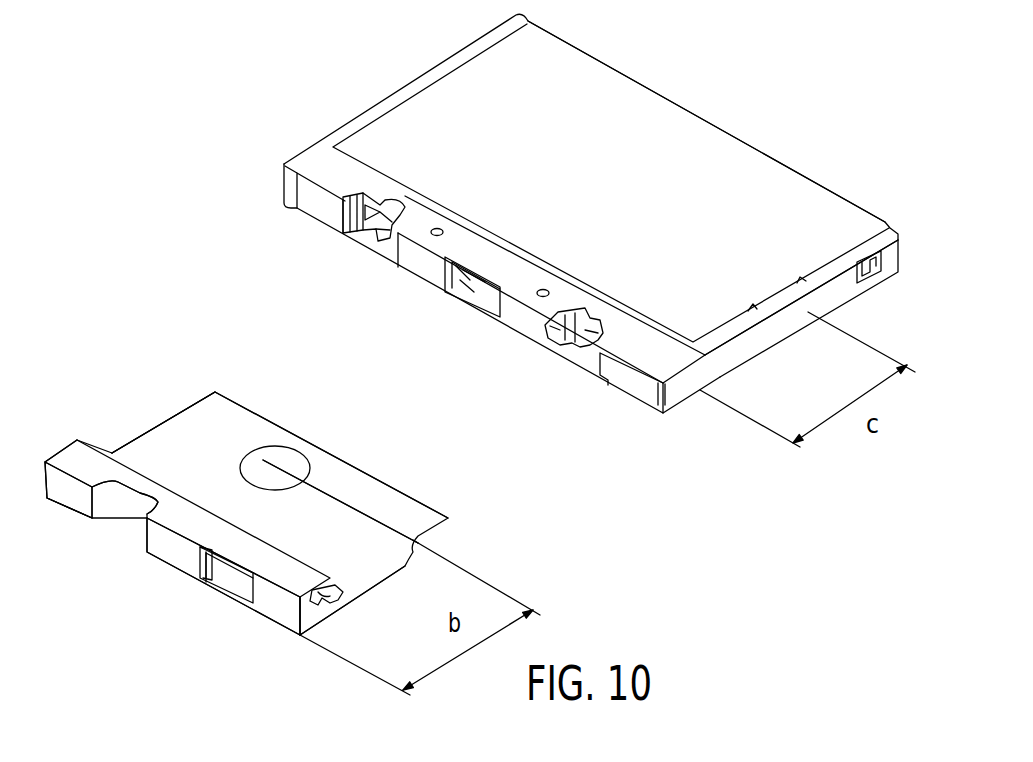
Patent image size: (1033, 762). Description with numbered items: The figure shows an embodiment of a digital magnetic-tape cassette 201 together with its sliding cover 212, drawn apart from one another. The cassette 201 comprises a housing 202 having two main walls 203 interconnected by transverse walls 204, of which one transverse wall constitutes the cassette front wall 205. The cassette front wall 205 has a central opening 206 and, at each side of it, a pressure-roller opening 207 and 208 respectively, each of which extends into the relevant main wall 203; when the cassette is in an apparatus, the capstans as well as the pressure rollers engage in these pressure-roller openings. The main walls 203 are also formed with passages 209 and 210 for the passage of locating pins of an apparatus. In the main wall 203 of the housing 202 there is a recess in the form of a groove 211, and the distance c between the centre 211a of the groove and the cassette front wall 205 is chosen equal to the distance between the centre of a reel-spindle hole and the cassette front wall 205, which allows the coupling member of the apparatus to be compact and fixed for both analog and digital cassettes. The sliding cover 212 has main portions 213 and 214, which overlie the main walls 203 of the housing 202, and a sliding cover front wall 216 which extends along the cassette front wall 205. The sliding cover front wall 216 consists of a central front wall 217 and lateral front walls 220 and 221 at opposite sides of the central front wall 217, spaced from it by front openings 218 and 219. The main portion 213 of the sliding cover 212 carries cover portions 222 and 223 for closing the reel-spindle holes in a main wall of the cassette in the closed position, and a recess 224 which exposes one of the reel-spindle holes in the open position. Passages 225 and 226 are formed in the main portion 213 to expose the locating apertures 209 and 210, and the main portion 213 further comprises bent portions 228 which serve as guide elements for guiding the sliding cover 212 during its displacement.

The cassette 201 is at (364, 102).
The housing 202 is at (760, 141).
The main walls 203 is at (565, 68).
The transverse walls 204 is at (788, 322).
The cassette front wall 205 is at (630, 384).
The central opening 206 is at (472, 291).
The pressure-roller opening 207 is at (368, 241).
The pressure-roller opening 208 is at (574, 352).
The passage 209 is at (439, 228).
The passage 210 is at (545, 288).
The groove 211 is at (757, 318).
The centre of the groove 211a is at (779, 298).
The sliding cover 212 is at (246, 392).
The main portion 213 is at (138, 438).
The main portion 214 is at (58, 440).
The sliding cover front wall 216 is at (43, 482).
The central front wall 217 is at (166, 548).
The front opening 218 is at (118, 525).
The front opening 219 is at (239, 580).
The lateral front wall 220 is at (82, 500).
The lateral front wall 221 is at (278, 612).
The cover portion 222 is at (201, 421).
The cover portion 223 is at (400, 510).
The recess 224 is at (288, 458).
The passage 225 is at (209, 579).
The passage 226 is at (326, 620).
The bent portions 228 is at (330, 605).